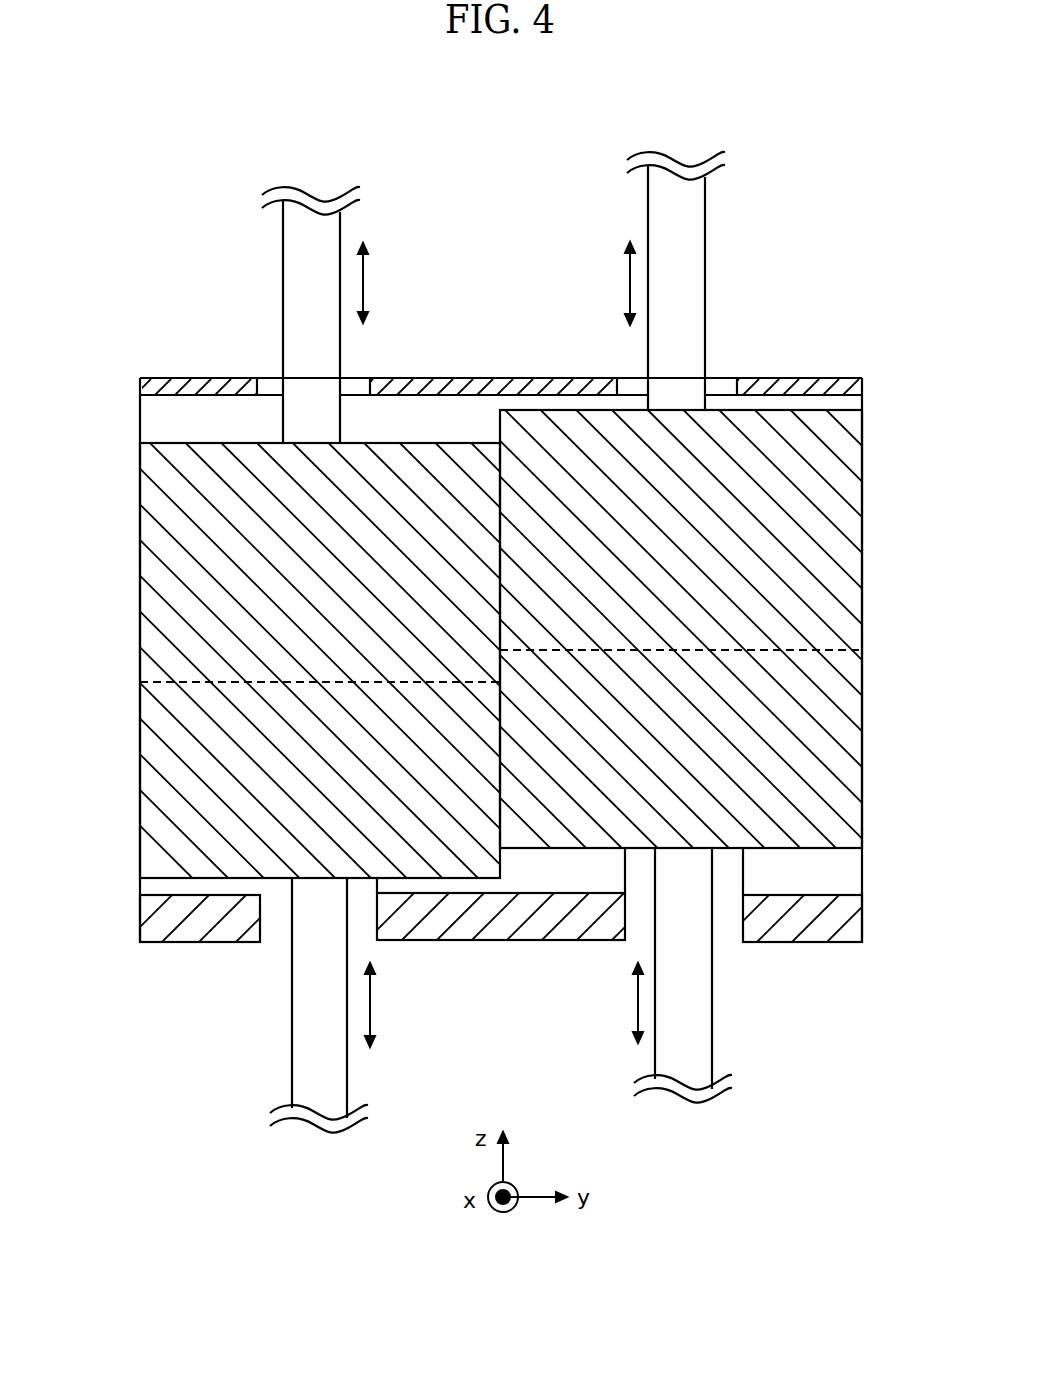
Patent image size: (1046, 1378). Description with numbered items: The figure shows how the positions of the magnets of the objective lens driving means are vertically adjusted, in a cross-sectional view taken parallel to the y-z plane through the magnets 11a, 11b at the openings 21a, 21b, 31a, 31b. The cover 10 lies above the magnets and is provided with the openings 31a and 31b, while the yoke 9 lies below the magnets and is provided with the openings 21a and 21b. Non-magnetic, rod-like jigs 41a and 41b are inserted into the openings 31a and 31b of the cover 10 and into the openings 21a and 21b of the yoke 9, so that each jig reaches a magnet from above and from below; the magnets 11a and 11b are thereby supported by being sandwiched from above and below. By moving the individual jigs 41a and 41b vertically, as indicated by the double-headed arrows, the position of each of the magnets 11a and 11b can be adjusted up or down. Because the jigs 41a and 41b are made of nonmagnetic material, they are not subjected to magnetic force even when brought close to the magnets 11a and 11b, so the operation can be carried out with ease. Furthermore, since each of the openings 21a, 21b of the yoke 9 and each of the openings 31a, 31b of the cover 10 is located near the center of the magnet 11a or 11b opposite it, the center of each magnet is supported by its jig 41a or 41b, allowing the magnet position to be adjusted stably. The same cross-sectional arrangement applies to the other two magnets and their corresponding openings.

The yoke 9 is at (487, 920).
The cover 10 is at (480, 378).
The magnet 11a is at (187, 537).
The magnet 11b is at (793, 503).
The opening 21a is at (275, 915).
The opening 21b is at (725, 910).
The opening 31a is at (270, 387).
The opening 31b is at (718, 385).
The jig 41a is at (308, 292).
The jig 41b is at (683, 292).